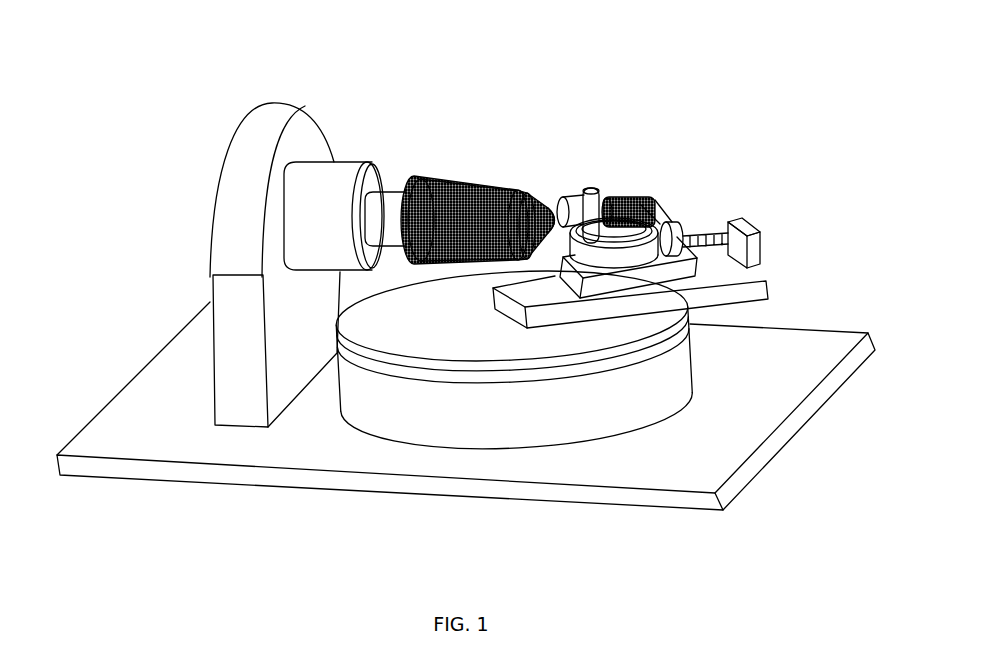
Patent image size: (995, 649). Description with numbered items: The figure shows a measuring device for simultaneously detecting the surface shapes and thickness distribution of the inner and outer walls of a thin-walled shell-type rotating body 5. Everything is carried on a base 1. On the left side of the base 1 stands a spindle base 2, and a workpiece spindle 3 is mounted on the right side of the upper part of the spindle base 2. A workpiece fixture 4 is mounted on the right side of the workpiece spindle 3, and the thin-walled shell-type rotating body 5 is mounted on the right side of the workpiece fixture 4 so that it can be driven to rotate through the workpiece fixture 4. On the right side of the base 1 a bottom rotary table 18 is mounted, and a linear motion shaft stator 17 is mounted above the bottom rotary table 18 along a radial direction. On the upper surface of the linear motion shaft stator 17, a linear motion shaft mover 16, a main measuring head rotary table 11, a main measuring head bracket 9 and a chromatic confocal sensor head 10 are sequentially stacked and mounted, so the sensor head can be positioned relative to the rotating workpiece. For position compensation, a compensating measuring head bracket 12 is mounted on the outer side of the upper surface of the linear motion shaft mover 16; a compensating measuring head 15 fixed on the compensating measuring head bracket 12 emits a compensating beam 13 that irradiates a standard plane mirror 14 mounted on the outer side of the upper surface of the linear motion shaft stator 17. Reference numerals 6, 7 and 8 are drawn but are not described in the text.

The base 1 is at (103, 430).
The spindle base 2 is at (230, 170).
The workpiece spindle 3 is at (325, 193).
The workpiece fixture 4 is at (385, 210).
The thin-walled shell-type rotating body 5 is at (448, 208).
The emitter flange 6 is at (475, 190).
The emitter end ring 7 is at (503, 188).
The nozzle tip 8 is at (552, 213).
The main measuring head bracket 9 is at (586, 190).
The chromatic confocal sensor head 10 is at (612, 203).
The main measuring head rotary table 11 is at (647, 225).
The compensating measuring head bracket 12 is at (680, 215).
The compensating beam 13 is at (730, 223).
The standard plane mirror 14 is at (752, 234).
The compensating measuring head 15 is at (700, 244).
The linear motion shaft mover 16 is at (673, 272).
The linear motion shaft stator 17 is at (690, 297).
The bottom rotary table 18 is at (490, 358).